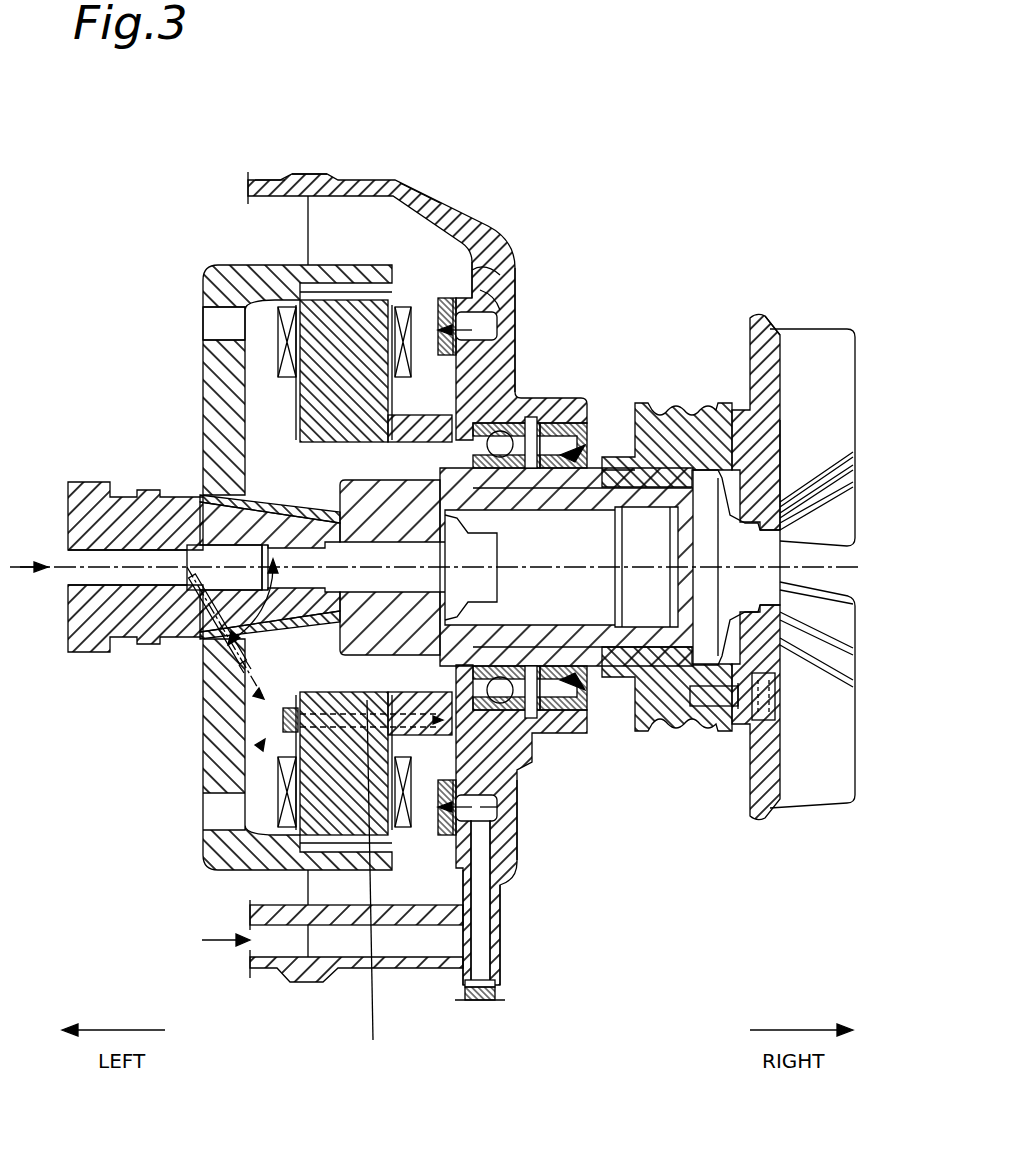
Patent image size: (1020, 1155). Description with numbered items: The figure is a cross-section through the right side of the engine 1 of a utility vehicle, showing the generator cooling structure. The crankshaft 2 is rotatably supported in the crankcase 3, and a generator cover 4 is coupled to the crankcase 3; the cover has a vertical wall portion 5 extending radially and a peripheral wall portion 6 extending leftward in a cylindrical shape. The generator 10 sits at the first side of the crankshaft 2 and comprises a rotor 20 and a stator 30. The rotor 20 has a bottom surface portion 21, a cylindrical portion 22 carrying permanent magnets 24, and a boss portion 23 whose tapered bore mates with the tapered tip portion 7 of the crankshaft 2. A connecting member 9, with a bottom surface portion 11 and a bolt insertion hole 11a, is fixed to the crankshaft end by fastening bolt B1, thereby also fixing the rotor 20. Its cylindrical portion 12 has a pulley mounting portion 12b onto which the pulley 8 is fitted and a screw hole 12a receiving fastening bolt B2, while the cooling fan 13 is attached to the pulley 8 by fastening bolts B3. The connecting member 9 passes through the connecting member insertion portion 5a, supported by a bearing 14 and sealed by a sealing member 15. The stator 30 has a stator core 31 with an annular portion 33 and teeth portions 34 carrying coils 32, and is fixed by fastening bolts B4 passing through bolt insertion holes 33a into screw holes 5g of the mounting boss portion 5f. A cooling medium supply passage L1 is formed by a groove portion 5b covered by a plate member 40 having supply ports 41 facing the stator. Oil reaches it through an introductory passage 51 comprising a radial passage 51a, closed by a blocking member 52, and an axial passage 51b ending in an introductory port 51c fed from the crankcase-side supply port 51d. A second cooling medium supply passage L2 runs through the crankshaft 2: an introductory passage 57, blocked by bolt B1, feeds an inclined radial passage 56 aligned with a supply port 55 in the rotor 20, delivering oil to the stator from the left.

The engine 1 is at (470, 148).
The crankshaft 2 is at (95, 655).
The crankcase 3 is at (268, 180).
The generator cover 4 is at (427, 185).
The vertical wall portion 5 is at (515, 757).
The connecting member insertion portion 5a is at (548, 705).
The groove portion 5b is at (508, 303).
The mounting boss portion 5f is at (392, 674).
The screw hole 5g is at (500, 782).
The peripheral wall portion 6 is at (336, 178).
The tip portion 7 is at (212, 503).
The pulley 8 is at (680, 403).
The connecting member 9 is at (580, 490).
The generator 10 is at (228, 848).
The bottom surface portion 11 is at (382, 512).
The bolt insertion hole 11a is at (427, 520).
The cylindrical portion 12 is at (557, 488).
The screw hole 12a is at (742, 520).
The pulley mounting portion 12b is at (742, 410).
The cooling fan 13 is at (772, 795).
The bearing 14 is at (540, 420).
The sealing member 15 is at (595, 672).
The rotor 20 is at (255, 540).
The bottom surface portion 21 is at (210, 405).
The cylindrical portion 22 is at (232, 265).
The boss portion 23 is at (245, 500).
The permanent magnets 24 is at (330, 292).
The stator 30 is at (490, 243).
The stator core 31 is at (414, 302).
The coils 32 is at (288, 378).
The annular portion 33 is at (305, 432).
The bolt insertion hole 33a is at (384, 887).
The teeth portions 34 is at (346, 330).
The plate member 40 is at (440, 355).
The supply port 41 is at (483, 300).
The introductory passage 51 is at (482, 882).
The radial passage 51a is at (482, 925).
The axial passage 51b is at (420, 948).
The introductory port 51c is at (328, 948).
The crankcase-side supply port 51d is at (285, 948).
The blocking member 52 is at (490, 1000).
The supply port 55 is at (222, 632).
The radial passage 56 is at (205, 620).
The introductory passage 57 is at (105, 578).
The fastening bolt B1 is at (500, 545).
The fastening bolt B2 is at (762, 530).
The fastening bolts B3 is at (765, 698).
The fastening bolts B4 is at (257, 745).
The cooling medium supply passage L1 is at (490, 808).
The second cooling medium supply passage L2 is at (203, 640).